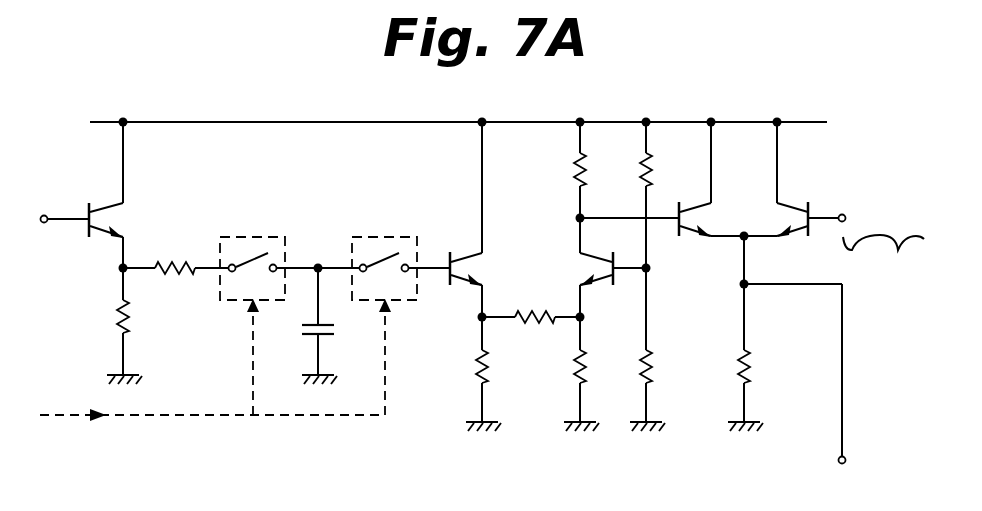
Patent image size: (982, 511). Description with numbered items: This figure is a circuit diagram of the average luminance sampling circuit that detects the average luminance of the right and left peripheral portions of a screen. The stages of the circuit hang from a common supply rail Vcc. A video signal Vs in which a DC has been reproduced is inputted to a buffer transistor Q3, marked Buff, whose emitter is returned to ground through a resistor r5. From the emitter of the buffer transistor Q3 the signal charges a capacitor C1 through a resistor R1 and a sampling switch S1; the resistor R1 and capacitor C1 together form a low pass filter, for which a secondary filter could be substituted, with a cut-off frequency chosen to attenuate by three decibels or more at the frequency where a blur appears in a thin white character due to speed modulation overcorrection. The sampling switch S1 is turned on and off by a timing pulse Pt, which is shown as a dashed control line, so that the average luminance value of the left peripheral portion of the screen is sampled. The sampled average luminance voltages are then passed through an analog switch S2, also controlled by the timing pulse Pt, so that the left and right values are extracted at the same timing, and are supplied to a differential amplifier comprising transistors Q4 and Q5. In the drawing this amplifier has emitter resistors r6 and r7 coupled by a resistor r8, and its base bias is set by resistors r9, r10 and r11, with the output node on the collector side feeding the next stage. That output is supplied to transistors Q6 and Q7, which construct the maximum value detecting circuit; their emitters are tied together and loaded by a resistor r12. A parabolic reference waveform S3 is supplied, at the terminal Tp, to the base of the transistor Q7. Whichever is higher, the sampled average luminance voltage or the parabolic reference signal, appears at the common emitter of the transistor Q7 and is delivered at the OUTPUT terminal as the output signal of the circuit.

The supply voltage rail Vcc is at (437, 122).
The video signal Vs is at (65, 239).
The buffer Buff is at (148, 175).
The buffer transistor Q3 is at (119, 197).
The resistor r5 is at (116, 326).
The resistor R1 is at (175, 284).
The sampling switch S1 is at (251, 235).
The analog switch S2 is at (383, 235).
The capacitor C1 is at (332, 326).
The timing pulse Pt is at (215, 360).
The transistor Q4 is at (480, 222).
The transistor Q5 is at (600, 267).
The resistor r6 is at (479, 374).
The resistor r7 is at (584, 374).
The resistor r8 is at (533, 333).
The resistor r9 is at (571, 172).
The resistor r10 is at (632, 195).
The resistor r11 is at (655, 349).
The transistor Q6 is at (704, 179).
The transistor Q7 is at (782, 179).
The test point terminal Tp is at (833, 205).
The parabolic reference waveform S3 is at (893, 252).
The resistor r12 is at (753, 357).
The output terminal OUTPUT is at (828, 374).